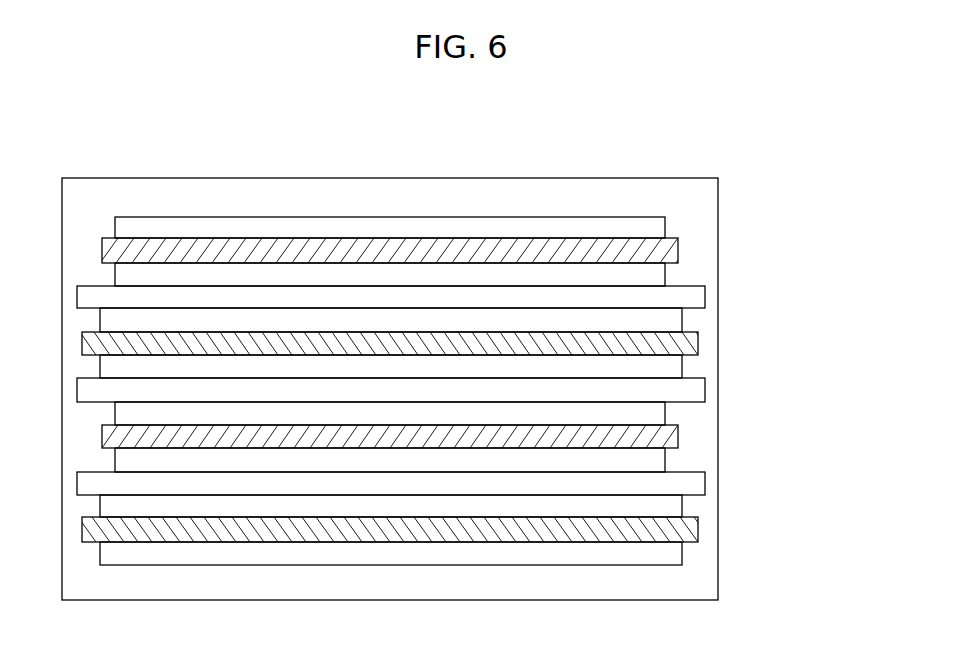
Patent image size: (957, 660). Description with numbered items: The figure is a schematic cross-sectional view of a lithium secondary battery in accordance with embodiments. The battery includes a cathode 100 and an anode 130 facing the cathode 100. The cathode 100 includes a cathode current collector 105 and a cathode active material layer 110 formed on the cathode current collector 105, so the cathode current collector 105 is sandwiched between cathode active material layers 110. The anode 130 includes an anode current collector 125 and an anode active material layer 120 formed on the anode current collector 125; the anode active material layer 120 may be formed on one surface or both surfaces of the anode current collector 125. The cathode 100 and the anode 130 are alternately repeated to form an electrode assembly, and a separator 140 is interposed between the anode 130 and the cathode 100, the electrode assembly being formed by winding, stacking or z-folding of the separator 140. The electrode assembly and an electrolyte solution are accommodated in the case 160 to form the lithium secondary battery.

The cathode 100 is at (472, 344).
The cathode current collector 105 is at (678, 247).
The cathode active material layer 110 is at (665, 222).
The anode active material layer 120 is at (673, 323).
The anode current collector 125 is at (698, 345).
The anode 130 is at (462, 436).
The separator 140 is at (580, 293).
The case 160 is at (718, 527).